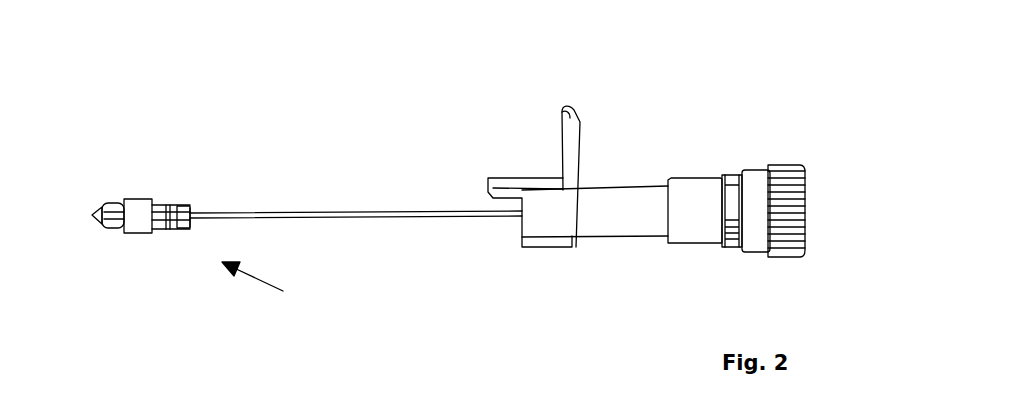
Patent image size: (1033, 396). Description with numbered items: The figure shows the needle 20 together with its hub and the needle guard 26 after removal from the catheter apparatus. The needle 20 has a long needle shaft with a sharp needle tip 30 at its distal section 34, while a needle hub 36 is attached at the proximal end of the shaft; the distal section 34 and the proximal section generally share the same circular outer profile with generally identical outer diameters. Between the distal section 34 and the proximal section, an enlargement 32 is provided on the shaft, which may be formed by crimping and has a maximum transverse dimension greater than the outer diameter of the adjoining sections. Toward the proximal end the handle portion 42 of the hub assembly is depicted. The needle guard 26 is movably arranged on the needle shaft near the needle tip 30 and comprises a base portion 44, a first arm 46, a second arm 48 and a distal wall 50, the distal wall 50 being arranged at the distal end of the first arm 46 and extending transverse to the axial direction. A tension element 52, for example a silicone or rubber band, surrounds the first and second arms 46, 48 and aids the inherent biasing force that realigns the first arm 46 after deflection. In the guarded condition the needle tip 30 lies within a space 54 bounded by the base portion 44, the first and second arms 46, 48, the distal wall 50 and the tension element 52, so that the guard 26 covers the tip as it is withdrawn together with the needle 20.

The needle 20 is at (396, 216).
The needle guard 26 is at (267, 285).
The needle tip 30 is at (103, 226).
The enlargement 32 is at (190, 227).
The distal section 34 is at (158, 222).
The needle hub 36 is at (503, 215).
The handle housing 42 is at (618, 236).
The base portion 44 is at (190, 208).
The first arm 46 is at (153, 231).
The second arm 48 is at (162, 222).
The distal wall 50 is at (100, 210).
The tension element 52 is at (128, 234).
The space 54 is at (163, 233).